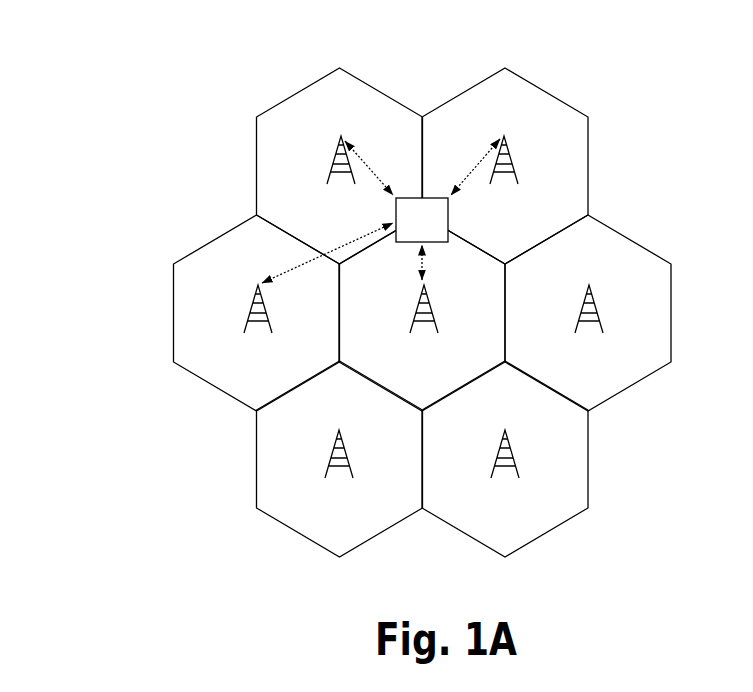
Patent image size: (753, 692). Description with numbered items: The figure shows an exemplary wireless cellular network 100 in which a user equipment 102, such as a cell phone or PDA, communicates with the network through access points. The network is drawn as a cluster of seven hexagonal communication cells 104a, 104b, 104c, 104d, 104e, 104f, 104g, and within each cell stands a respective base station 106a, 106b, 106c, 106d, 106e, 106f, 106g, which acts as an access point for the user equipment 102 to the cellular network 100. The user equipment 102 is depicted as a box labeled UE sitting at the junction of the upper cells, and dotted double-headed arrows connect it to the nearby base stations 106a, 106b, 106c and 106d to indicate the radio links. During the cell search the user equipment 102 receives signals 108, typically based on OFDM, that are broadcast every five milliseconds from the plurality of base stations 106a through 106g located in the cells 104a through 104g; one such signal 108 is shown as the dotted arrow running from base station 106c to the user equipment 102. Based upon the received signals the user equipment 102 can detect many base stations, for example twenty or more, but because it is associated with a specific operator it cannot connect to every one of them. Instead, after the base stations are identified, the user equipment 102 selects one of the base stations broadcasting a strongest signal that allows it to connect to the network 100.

The wireless cellular network 100 is at (123, 97).
The user equipment 102 is at (451, 219).
The communication cell 104a is at (315, 80).
The communication cell 104b is at (482, 80).
The communication cell 104c is at (229, 229).
The communication cell 104d is at (374, 240).
The communication cell 104e is at (616, 229).
The communication cell 104f is at (319, 547).
The communication cell 104g is at (482, 547).
The base station 106a is at (337, 135).
The base station 106b is at (501, 135).
The base station 106c is at (254, 284).
The base station 106d is at (428, 287).
The base station 106e is at (592, 287).
The base station 106f is at (342, 432).
The base station 106g is at (508, 432).
The signals 108 is at (298, 262).